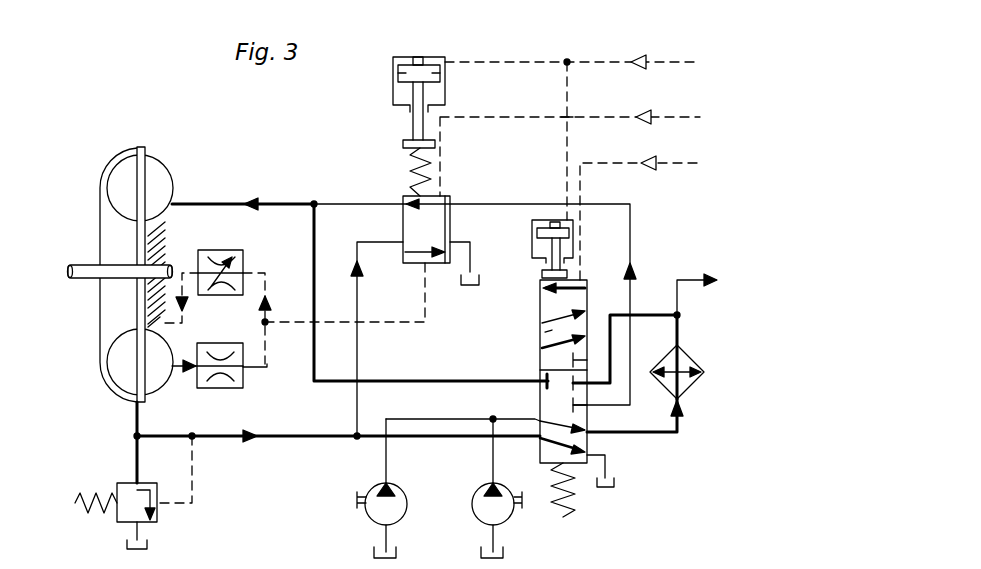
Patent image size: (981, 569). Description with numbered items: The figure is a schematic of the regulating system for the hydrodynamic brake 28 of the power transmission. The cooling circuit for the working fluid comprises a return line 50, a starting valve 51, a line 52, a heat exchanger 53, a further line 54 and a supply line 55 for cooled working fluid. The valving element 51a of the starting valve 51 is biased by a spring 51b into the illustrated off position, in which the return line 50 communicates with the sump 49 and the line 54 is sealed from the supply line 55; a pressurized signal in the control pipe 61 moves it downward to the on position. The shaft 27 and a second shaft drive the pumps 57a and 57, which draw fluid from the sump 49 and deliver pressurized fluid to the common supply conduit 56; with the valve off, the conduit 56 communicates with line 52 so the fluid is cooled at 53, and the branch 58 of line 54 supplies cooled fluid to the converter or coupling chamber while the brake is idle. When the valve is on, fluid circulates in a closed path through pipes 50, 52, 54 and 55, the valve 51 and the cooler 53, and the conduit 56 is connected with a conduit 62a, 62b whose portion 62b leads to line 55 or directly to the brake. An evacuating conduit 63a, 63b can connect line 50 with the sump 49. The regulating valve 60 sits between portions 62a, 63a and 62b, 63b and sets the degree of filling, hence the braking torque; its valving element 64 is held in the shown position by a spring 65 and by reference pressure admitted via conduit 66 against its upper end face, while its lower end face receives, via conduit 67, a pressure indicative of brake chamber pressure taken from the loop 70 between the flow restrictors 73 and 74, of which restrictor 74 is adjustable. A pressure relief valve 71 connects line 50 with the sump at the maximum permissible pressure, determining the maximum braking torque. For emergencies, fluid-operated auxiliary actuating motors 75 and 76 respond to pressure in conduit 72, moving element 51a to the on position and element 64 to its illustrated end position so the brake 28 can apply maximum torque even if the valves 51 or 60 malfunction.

The shaft 27 is at (85, 280).
The hydrodynamic brake 28 is at (173, 153).
The sump 49 is at (472, 287).
The return line 50 is at (172, 437).
The starting valve 51 is at (594, 445).
The valving element 51a is at (552, 330).
The spring 51b is at (565, 512).
The line 52 is at (657, 434).
The heat exchanger 53 is at (684, 362).
The line 54 is at (657, 293).
The supply line 55 is at (313, 260).
The supply conduit 56 is at (523, 418).
The pump 57 is at (486, 504).
The pump 57a is at (380, 508).
The branch 58 is at (683, 272).
The regulating valve 60 is at (396, 200).
The control pipe 61 is at (605, 166).
The conduit portion 62a is at (523, 204).
The conduit portion 62b is at (335, 204).
The evacuating conduit portion 63a is at (360, 298).
The evacuating conduit portion 63b is at (473, 253).
The valving element 64 is at (422, 217).
The spring 65 is at (410, 142).
The conduit 66 is at (498, 119).
The conduit 67 is at (368, 324).
The loop 70 is at (265, 338).
The pressure relief valve 71 is at (128, 495).
The conduit 72 is at (572, 60).
The flow restrictor 73 is at (237, 382).
The flow restrictor 74 is at (220, 255).
The auxiliary actuating motor 75 is at (568, 250).
The auxiliary actuating motor 76 is at (436, 95).